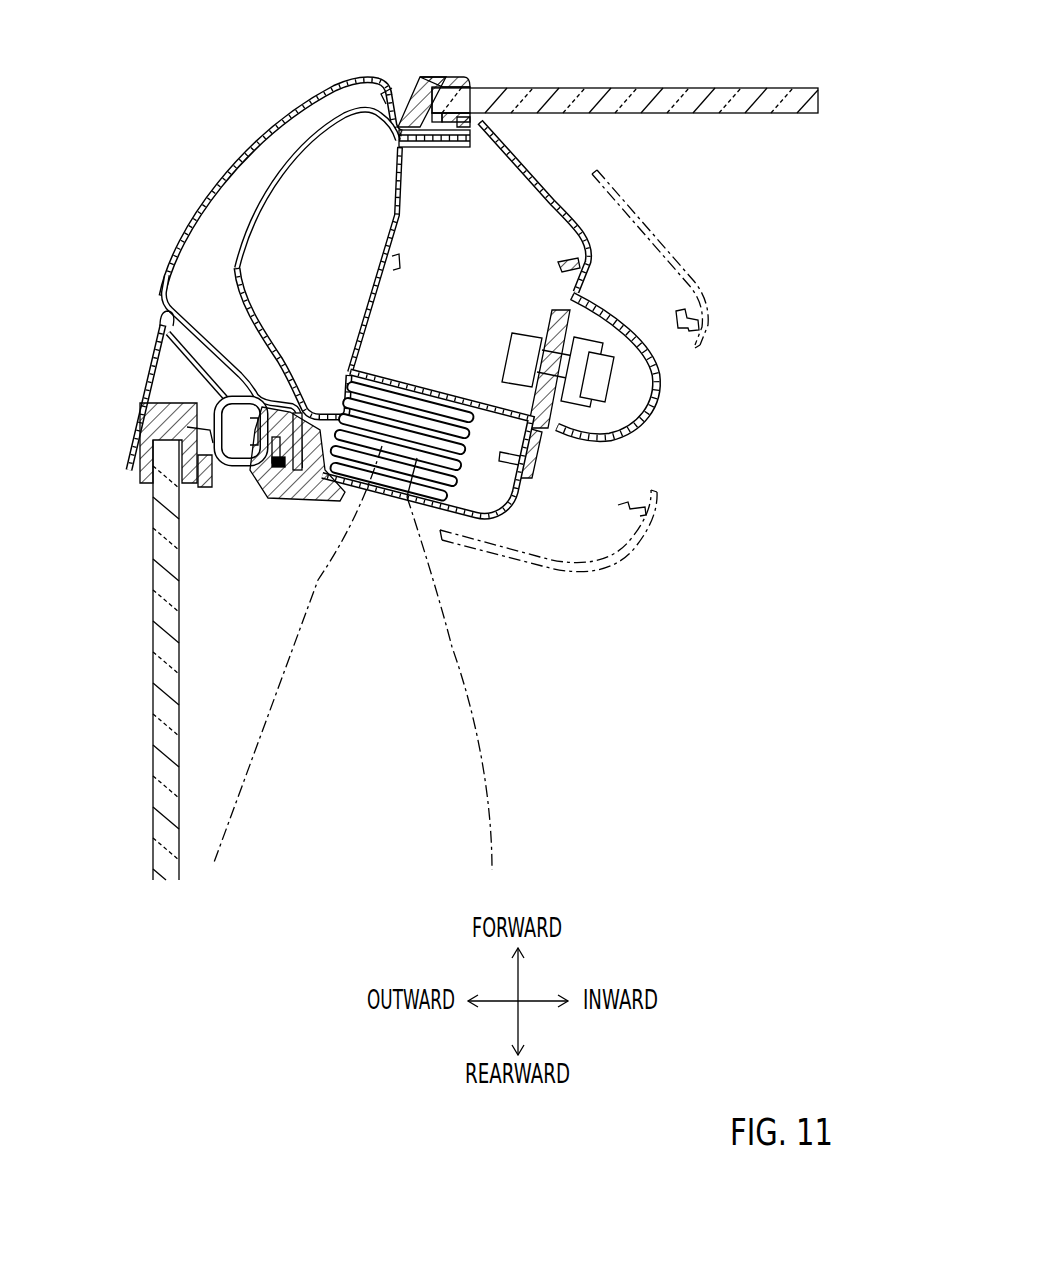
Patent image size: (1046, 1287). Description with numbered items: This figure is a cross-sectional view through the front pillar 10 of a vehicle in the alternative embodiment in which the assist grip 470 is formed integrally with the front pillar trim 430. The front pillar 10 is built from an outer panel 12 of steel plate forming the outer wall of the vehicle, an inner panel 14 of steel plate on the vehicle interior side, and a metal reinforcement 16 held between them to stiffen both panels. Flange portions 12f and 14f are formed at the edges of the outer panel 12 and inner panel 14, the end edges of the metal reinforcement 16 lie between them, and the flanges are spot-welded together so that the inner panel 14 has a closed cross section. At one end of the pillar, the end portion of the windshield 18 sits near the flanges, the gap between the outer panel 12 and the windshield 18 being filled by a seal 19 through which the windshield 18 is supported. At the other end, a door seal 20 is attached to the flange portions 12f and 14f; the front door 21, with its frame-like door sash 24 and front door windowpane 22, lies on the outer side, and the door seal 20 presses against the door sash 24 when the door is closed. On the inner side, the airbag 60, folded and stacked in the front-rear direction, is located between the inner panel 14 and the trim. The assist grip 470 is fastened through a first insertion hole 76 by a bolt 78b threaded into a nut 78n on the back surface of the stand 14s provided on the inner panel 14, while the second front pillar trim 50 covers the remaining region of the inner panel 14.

The front pillar 10 is at (236, 160).
The outer panel 12 is at (282, 118).
The flange portion 12f is at (437, 112).
The inner panel 14 is at (387, 240).
The flange portion 14f is at (436, 140).
The stand 14s is at (397, 264).
The metal reinforcement 16 is at (275, 205).
The windshield 18 is at (610, 97).
The seal 19 is at (420, 78).
The door seal 20 is at (290, 478).
The front door 21 is at (72, 437).
The front door windowpane 22 is at (170, 558).
The door sash 24 is at (150, 436).
The front pillar trim 430 is at (555, 178).
The assist grip 470 is at (662, 371).
The first insertion hole 76 is at (594, 378).
The bolt 78b is at (568, 382).
The nut 78n is at (522, 371).
The airbag 60 is at (391, 445).
The second front pillar trim 50 is at (497, 522).